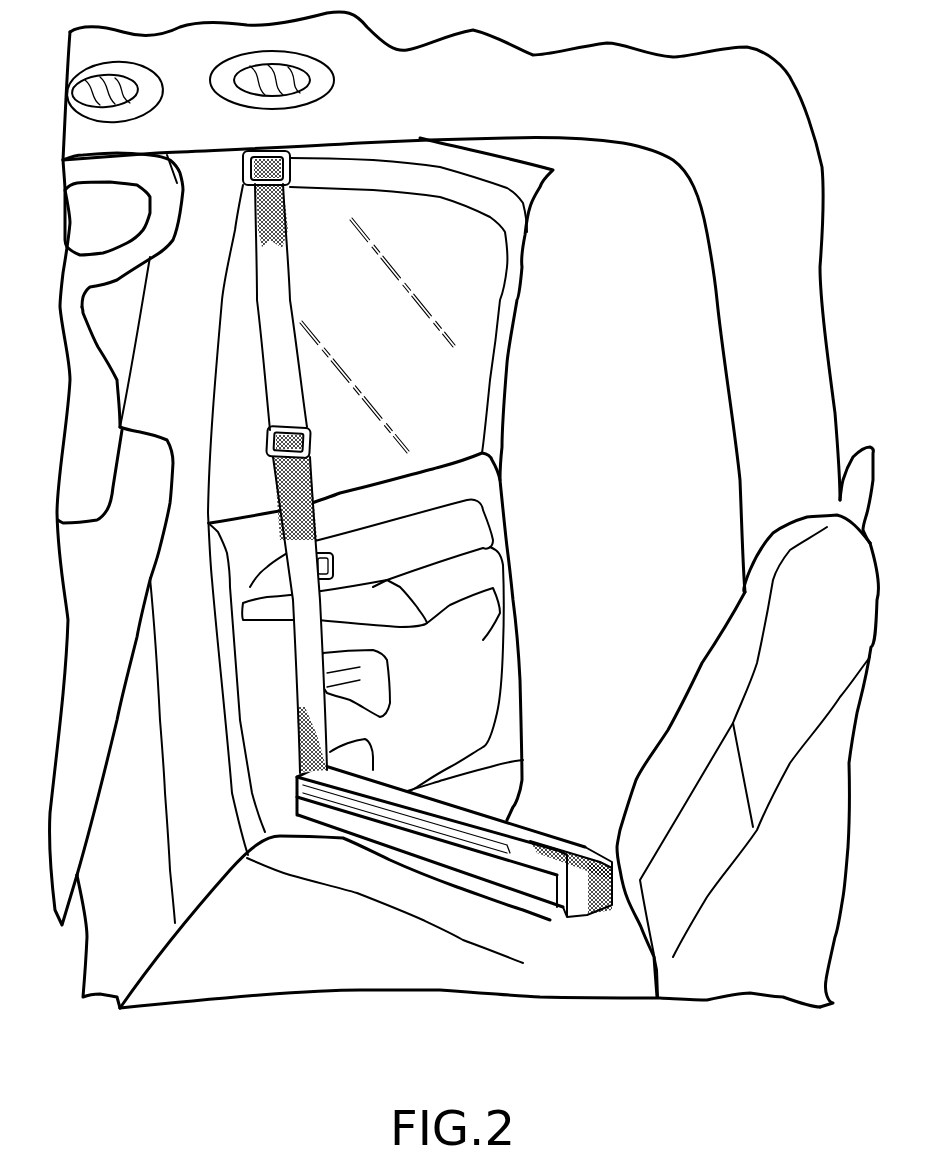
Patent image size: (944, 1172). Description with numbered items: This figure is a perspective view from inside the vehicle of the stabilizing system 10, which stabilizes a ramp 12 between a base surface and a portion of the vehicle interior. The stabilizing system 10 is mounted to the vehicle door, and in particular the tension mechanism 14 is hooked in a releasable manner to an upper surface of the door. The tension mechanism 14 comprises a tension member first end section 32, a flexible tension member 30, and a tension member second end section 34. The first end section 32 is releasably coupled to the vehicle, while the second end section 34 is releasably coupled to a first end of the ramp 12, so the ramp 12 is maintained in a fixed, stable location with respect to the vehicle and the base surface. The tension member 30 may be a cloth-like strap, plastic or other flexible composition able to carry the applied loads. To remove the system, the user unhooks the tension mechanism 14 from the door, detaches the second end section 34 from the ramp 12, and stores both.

The stabilizing system 10 is at (262, 537).
The ramp 12 is at (548, 913).
The tension mechanism 14 is at (307, 378).
The tension member 30 is at (258, 330).
The tension member first end section 32 is at (286, 202).
The tension member second end section 34 is at (607, 910).